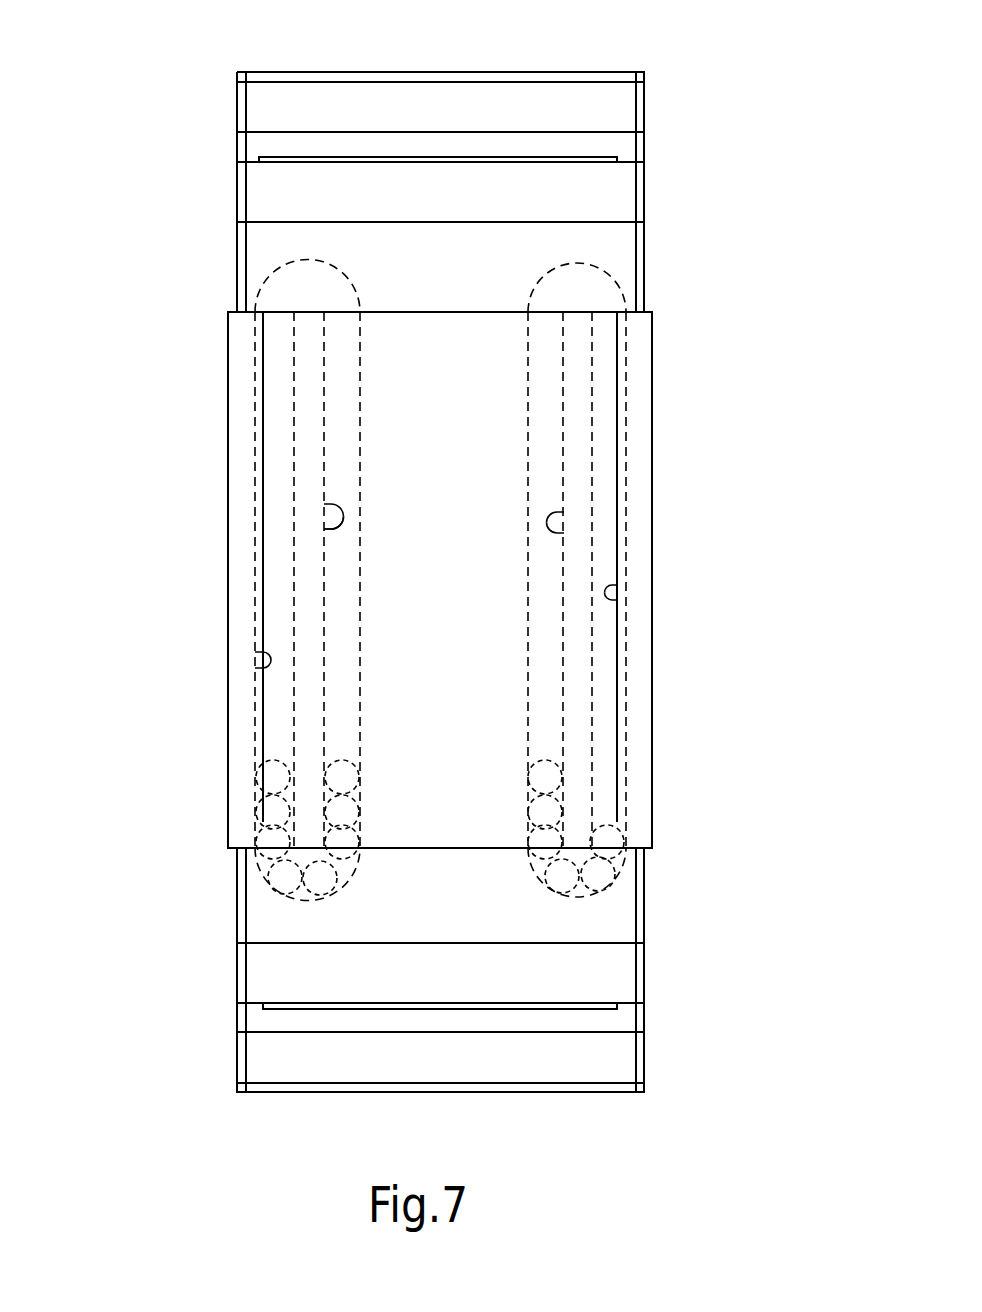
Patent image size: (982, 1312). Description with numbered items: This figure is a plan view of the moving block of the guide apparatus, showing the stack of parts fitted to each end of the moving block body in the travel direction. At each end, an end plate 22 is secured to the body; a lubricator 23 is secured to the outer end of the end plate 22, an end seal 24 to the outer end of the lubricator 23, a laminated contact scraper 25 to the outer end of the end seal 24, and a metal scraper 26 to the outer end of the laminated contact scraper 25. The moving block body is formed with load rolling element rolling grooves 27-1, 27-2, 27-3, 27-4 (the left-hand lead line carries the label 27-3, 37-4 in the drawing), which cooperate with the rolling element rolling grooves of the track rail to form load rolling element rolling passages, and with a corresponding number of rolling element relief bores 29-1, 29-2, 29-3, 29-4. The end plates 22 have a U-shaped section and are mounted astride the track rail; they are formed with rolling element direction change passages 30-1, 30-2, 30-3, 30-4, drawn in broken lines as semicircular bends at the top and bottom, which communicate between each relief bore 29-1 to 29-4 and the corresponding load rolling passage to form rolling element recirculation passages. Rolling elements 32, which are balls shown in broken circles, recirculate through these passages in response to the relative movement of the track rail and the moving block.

The end plate 22 is at (625, 238).
The lubricator 23 is at (612, 193).
The end seal 24 is at (627, 145).
The laminated contact scraper 25 is at (612, 112).
The metal scraper 26 is at (584, 75).
The load rolling element rolling groove 27-1 is at (556, 517).
The load rolling element rolling groove 27-2 is at (560, 531).
The load rolling element rolling groove 27-3 is at (334, 510).
The load rolling element rolling groove 27-4 is at (334, 523).
The tube hook portion 37-4 is at (323, 506).
The rolling element relief bore 29-1 is at (611, 589).
The rolling element relief bore 29-2 is at (617, 597).
The rolling element relief bore 29-3 is at (263, 656).
The rolling element relief bore 29-4 is at (255, 655).
The rolling element direction change passage 30-1 is at (577, 287).
The rolling element direction change passage 30-2 is at (577, 872).
The rolling element direction change passage 30-3 is at (307, 286).
The rolling element direction change passage 30-4 is at (307, 874).
The rolling element 32 is at (330, 777).